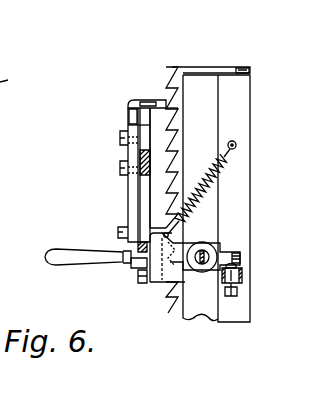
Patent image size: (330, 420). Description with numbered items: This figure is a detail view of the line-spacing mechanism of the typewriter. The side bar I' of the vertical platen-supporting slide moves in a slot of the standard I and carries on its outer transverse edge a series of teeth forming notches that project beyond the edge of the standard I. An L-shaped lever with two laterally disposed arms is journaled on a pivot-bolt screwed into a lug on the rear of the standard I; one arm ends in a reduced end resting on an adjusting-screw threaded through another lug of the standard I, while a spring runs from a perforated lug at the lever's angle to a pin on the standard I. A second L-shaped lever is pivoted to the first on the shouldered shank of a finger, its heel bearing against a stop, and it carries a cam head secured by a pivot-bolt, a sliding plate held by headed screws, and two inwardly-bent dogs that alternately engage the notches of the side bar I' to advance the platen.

The side bar of the platen-supporting slide I' is at (211, 60).
The standard I is at (216, 198).